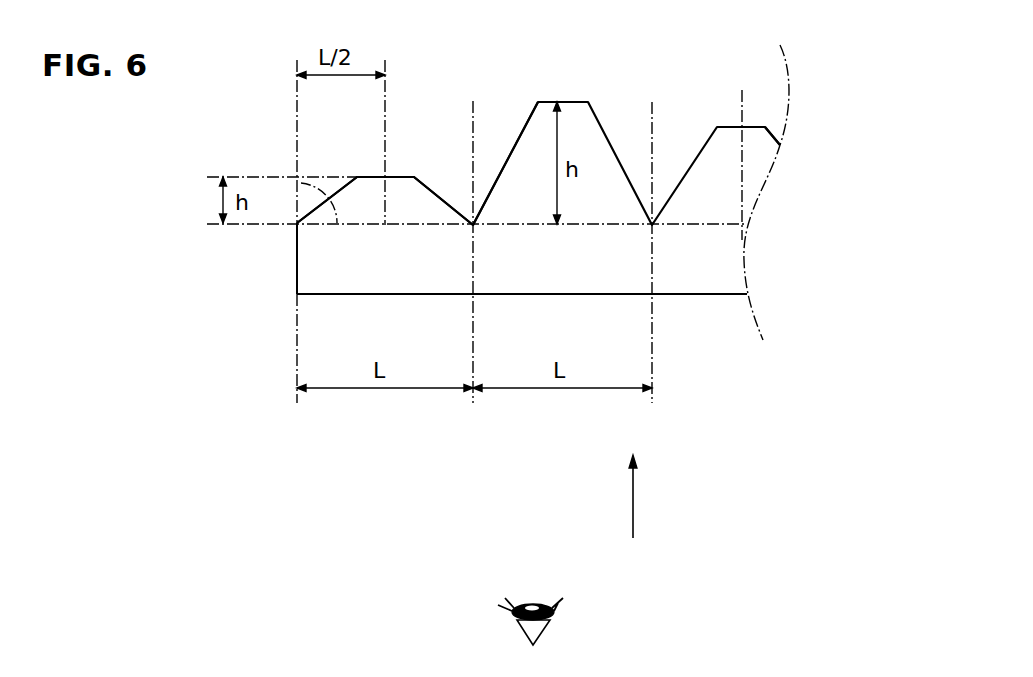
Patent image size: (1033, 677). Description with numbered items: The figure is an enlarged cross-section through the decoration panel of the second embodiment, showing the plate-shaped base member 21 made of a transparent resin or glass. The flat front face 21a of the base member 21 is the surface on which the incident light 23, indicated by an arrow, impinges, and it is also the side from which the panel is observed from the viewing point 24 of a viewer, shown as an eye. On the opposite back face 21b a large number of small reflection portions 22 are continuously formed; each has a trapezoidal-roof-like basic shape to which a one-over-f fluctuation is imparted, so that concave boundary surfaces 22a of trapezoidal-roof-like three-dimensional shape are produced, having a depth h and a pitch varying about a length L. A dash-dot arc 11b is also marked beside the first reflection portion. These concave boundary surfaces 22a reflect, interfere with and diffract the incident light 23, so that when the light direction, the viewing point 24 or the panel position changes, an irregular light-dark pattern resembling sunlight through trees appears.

The drill tip profile arc 11b is at (297, 177).
The base member 21 is at (310, 267).
The front face 21a is at (683, 295).
The back face 21b is at (416, 225).
The small reflection portions 22 is at (593, 108).
The concave boundary surfaces 22a is at (497, 182).
The incident light 23 is at (633, 502).
The viewing point 24 is at (542, 628).